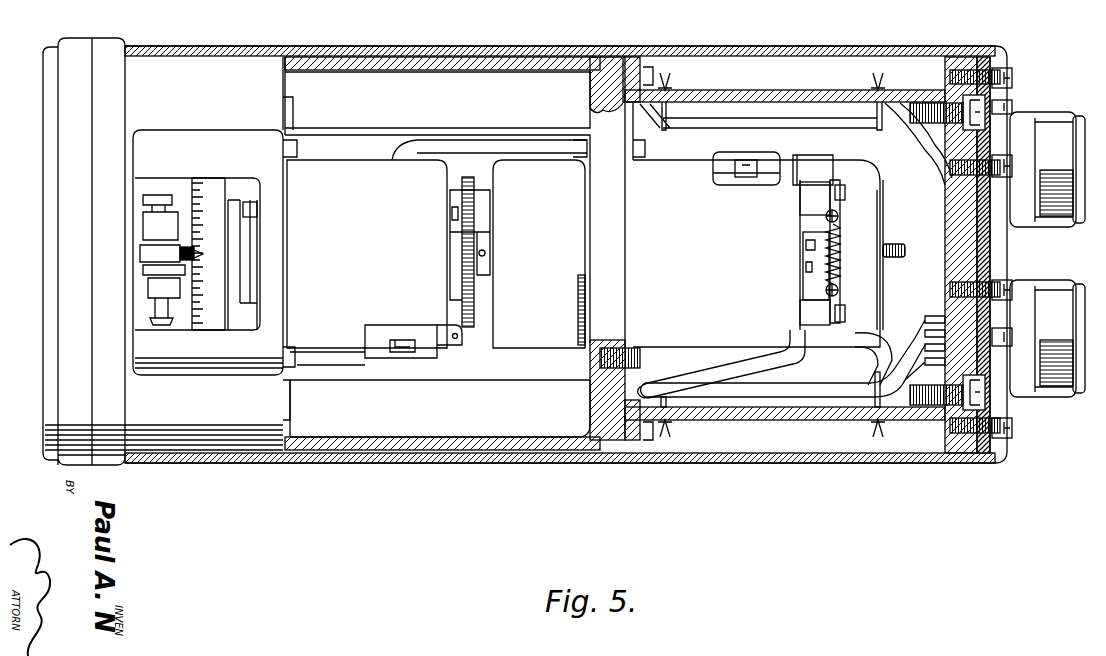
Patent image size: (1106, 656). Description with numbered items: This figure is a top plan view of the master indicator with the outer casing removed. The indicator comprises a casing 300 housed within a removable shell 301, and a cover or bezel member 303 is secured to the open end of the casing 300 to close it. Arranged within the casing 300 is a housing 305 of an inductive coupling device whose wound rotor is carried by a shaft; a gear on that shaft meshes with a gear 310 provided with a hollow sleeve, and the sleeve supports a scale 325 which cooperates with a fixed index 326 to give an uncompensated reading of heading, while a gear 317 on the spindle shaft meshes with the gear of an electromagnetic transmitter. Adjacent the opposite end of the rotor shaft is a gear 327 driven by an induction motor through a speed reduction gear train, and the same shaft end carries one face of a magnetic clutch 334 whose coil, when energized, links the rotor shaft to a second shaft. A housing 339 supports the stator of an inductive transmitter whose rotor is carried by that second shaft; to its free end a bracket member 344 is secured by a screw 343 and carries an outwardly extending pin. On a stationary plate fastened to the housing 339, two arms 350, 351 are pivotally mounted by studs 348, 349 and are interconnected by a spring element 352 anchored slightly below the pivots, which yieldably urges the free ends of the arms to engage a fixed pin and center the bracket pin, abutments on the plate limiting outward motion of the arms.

The casing 300 is at (482, 68).
The removable shell 301 is at (386, 40).
The cover or bezel member 303 is at (48, 69).
The housing 305 is at (385, 235).
The gear 310 is at (240, 205).
The gear 317 is at (258, 212).
The scale 325 is at (215, 185).
The fixed index 326 is at (150, 253).
The gear 327 is at (478, 187).
The magnetic clutch 334 is at (572, 227).
The housing 339 is at (748, 245).
The screw 343 is at (818, 232).
The bracket member 344 is at (818, 260).
The stud 348 is at (802, 312).
The stud 349 is at (843, 190).
The arm 350 is at (792, 314).
The arm 351 is at (800, 200).
The spring element 352 is at (843, 273).